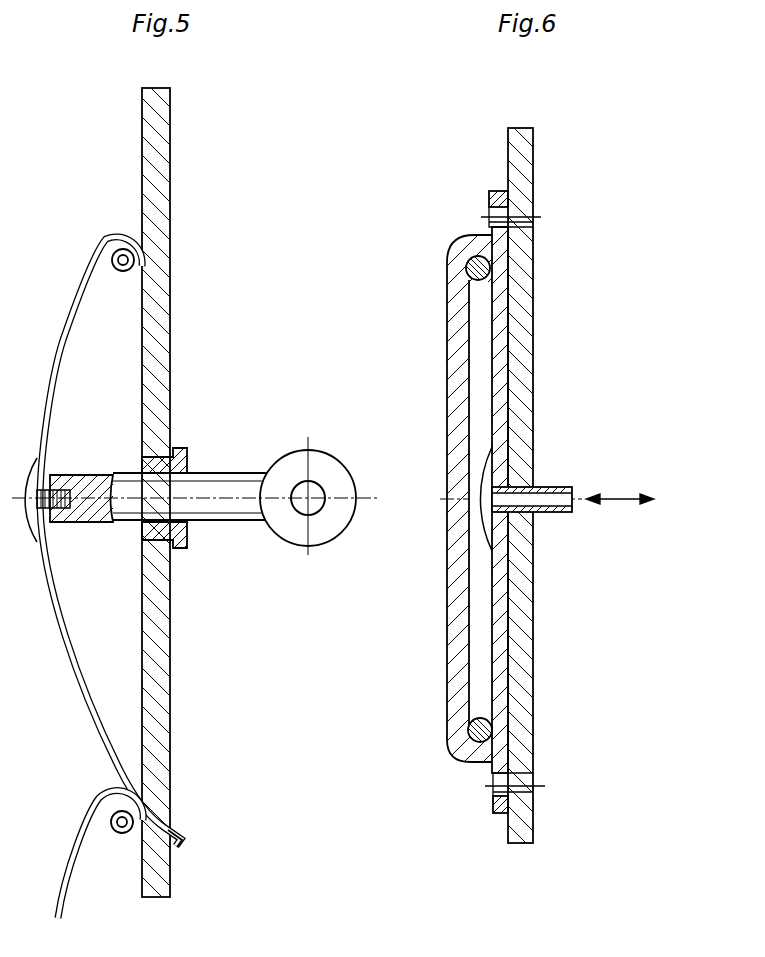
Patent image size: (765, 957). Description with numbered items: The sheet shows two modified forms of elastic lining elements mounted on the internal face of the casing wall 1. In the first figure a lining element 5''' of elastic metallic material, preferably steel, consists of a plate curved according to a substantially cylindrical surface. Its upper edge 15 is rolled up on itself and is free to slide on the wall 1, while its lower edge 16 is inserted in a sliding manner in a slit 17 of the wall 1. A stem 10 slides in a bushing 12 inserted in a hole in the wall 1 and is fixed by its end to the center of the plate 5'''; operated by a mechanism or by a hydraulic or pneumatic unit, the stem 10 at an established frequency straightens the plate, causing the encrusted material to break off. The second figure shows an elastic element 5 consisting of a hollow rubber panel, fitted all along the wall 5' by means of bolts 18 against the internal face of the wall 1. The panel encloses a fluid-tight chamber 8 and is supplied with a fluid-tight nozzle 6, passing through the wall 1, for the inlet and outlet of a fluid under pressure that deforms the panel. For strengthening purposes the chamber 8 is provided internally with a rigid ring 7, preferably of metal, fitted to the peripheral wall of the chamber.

In FIG. 5, the wall 1 is at (160, 182).
In FIG. 6, the wall 1 is at (518, 290).
In FIG. 5, the upper edge 15 is at (126, 238).
In FIG. 5, the lining element 5''' is at (97, 541).
In FIG. 5, the stem 10 is at (229, 490).
In FIG. 5, the bushing 12 is at (190, 541).
In FIG. 5, the slit 17 is at (172, 830).
In FIG. 5, the lower edge 16 is at (183, 843).
In FIG. 6, the bolts 18 is at (526, 215).
In FIG. 6, the elastic element 5 is at (449, 509).
In FIG. 6, the chamber 8 is at (478, 348).
In FIG. 6, the wall 5' is at (535, 502).
In FIG. 6, the rigid ring 7 is at (478, 730).
In FIG. 6, the nozzle 6 is at (556, 487).